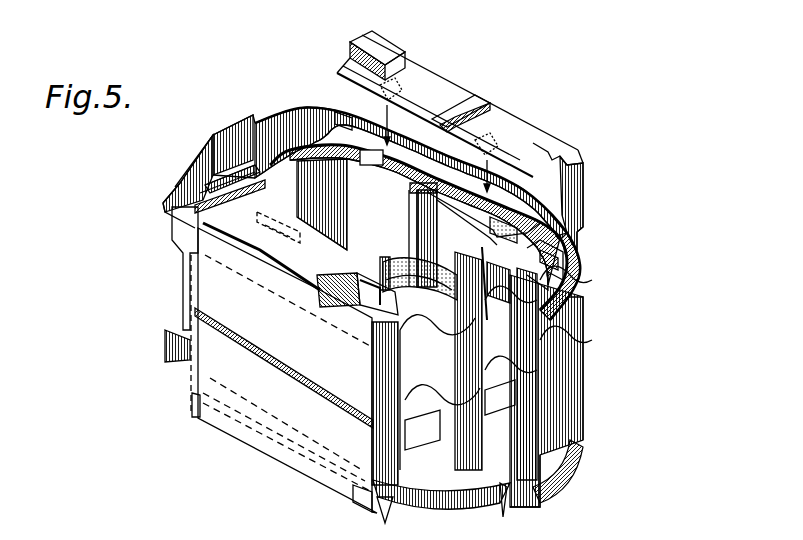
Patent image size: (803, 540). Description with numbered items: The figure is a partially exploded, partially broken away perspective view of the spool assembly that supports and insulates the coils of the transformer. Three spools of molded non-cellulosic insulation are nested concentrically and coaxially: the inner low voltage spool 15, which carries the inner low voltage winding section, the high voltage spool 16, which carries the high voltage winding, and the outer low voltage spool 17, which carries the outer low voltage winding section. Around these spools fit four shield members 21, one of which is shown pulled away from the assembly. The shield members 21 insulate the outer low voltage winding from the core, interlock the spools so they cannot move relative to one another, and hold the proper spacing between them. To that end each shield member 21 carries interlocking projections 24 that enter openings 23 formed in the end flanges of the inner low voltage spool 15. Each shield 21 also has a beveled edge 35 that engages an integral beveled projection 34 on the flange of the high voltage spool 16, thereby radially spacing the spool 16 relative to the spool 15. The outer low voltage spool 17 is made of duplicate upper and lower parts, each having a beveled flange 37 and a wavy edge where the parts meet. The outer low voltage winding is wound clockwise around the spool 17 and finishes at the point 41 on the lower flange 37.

The inner low voltage spool 15 is at (318, 165).
The high voltage spool 16 is at (280, 157).
The outer low voltage spool 17 is at (238, 125).
The shield member 21 is at (445, 83).
The opening 23 is at (465, 222).
The interlocking projection 24 is at (394, 85).
The beveled projection 34 is at (343, 114).
The beveled edge 35 is at (363, 43).
The beveled flange 37 is at (505, 474).
The finish point 41 is at (492, 503).